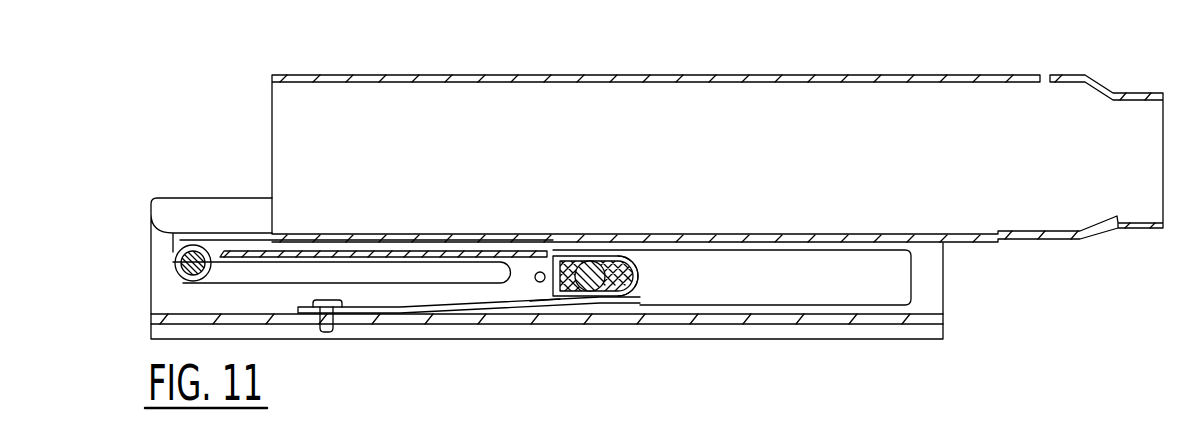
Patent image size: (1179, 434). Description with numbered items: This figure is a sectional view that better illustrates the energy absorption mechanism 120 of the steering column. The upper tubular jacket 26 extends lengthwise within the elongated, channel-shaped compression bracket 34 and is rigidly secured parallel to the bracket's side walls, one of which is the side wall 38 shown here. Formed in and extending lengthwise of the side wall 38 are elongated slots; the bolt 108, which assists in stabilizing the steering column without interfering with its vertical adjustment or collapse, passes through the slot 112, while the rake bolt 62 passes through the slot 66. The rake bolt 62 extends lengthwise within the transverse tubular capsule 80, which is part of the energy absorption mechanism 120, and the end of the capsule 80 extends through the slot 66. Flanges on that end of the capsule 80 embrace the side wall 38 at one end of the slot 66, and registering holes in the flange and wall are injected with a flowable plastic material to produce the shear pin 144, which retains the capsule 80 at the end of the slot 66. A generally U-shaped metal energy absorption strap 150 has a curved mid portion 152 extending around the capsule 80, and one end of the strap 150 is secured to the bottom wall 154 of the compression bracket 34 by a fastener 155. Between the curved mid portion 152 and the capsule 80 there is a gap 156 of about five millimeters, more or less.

The upper tubular jacket 26 is at (612, 77).
The side wall 38 is at (158, 243).
The bolt 108 is at (175, 263).
The slot 112 is at (273, 280).
The energy absorption strap 150 is at (400, 250).
The shear pin 144 is at (532, 271).
The capsule 80 is at (573, 255).
The rake bolt 62 is at (597, 258).
The gap 156 is at (620, 260).
The curved mid portion 152 is at (640, 280).
The slot 66 is at (810, 255).
The bottom wall 154 is at (432, 313).
The energy absorption mechanism 120 is at (545, 308).
The fastener 155 is at (327, 334).
The compression bracket 34 is at (890, 332).